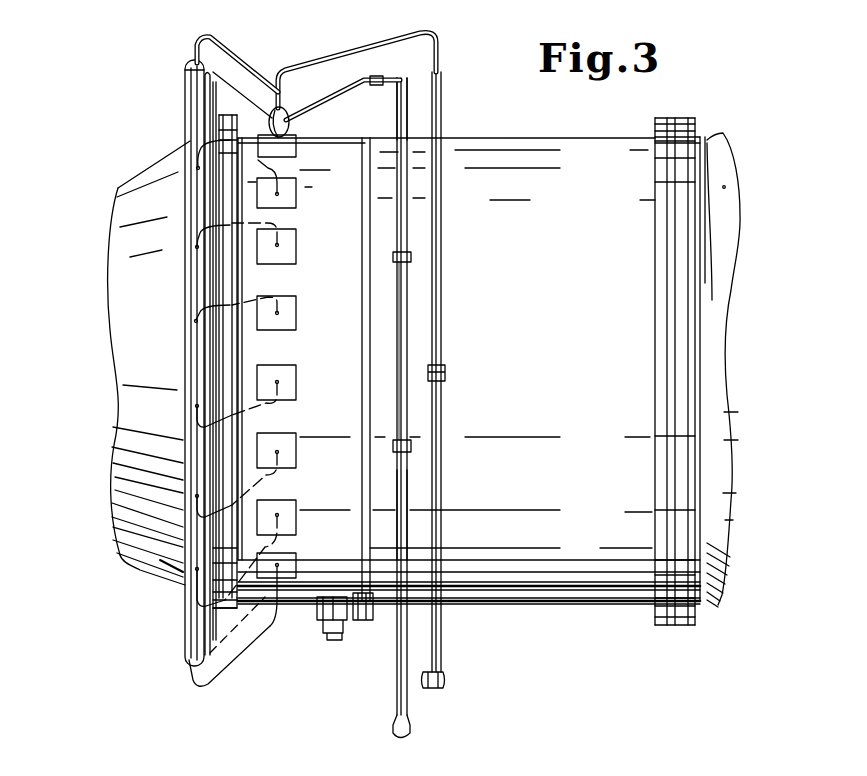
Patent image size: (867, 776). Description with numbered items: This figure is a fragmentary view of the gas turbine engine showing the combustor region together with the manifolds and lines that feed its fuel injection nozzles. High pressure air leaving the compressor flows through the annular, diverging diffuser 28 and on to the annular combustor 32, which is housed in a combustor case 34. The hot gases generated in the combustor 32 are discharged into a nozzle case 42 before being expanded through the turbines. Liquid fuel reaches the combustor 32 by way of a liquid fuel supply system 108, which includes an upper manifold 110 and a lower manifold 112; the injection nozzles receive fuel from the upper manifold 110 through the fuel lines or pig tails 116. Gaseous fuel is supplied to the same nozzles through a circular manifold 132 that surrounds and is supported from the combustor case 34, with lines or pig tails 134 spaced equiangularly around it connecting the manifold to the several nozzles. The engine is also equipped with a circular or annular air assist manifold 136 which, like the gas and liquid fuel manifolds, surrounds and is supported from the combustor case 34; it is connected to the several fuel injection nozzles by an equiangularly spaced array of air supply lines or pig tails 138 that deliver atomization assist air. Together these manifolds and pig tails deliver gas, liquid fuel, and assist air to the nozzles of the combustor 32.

The diffuser 28 is at (112, 353).
The combustor 32 is at (552, 599).
The combustor case 34 is at (529, 345).
The nozzle case 42 is at (737, 507).
The liquid fuel supply system 108 is at (409, 300).
The upper manifold 110 is at (402, 113).
The lower manifold 112 is at (405, 535).
The fuel lines or pig tails 116 is at (345, 85).
The circular manifold 132 is at (185, 303).
The lines or pig tails 134 is at (250, 68).
The air assist manifold 136 is at (444, 233).
The air supply lines or pig tails 138 is at (398, 42).